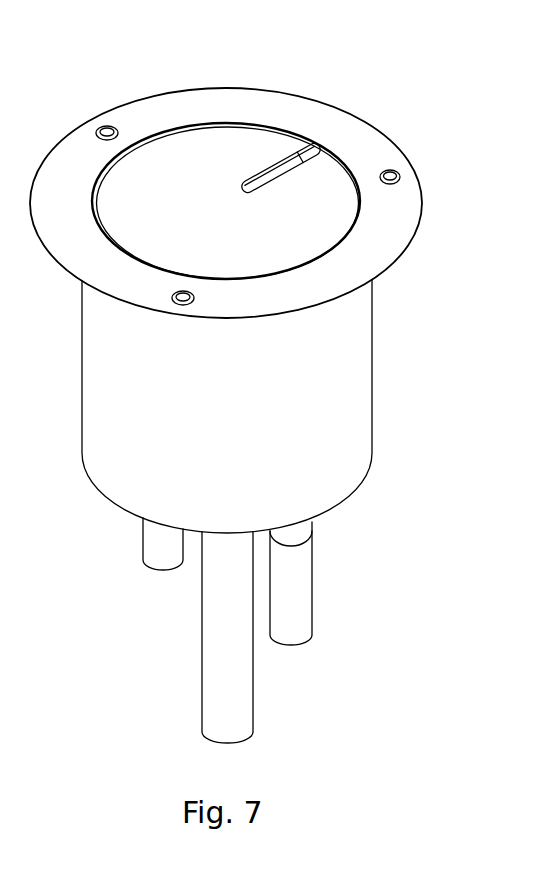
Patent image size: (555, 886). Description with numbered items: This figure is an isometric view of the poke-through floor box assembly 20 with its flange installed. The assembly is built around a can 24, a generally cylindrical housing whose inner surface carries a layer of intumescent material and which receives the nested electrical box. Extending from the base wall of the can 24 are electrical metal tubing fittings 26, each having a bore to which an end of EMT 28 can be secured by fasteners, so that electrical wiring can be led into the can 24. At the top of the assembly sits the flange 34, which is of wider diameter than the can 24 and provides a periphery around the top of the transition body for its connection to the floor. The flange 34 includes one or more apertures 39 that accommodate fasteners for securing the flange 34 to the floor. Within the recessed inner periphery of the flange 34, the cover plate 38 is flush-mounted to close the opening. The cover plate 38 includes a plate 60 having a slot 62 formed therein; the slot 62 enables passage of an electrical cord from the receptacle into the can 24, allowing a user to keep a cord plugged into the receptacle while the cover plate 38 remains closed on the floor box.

The poke-through floor box assembly 20 is at (412, 101).
The can 24 is at (241, 412).
The electrical metal tubing (EMT) fitting 26 is at (313, 530).
The electrical metal tubing (EMT) 28 is at (313, 612).
The flange 34 is at (413, 245).
The cover plate 38 is at (315, 235).
The aperture 39 is at (400, 175).
The plate 60 is at (187, 221).
The slot 62 is at (267, 172).